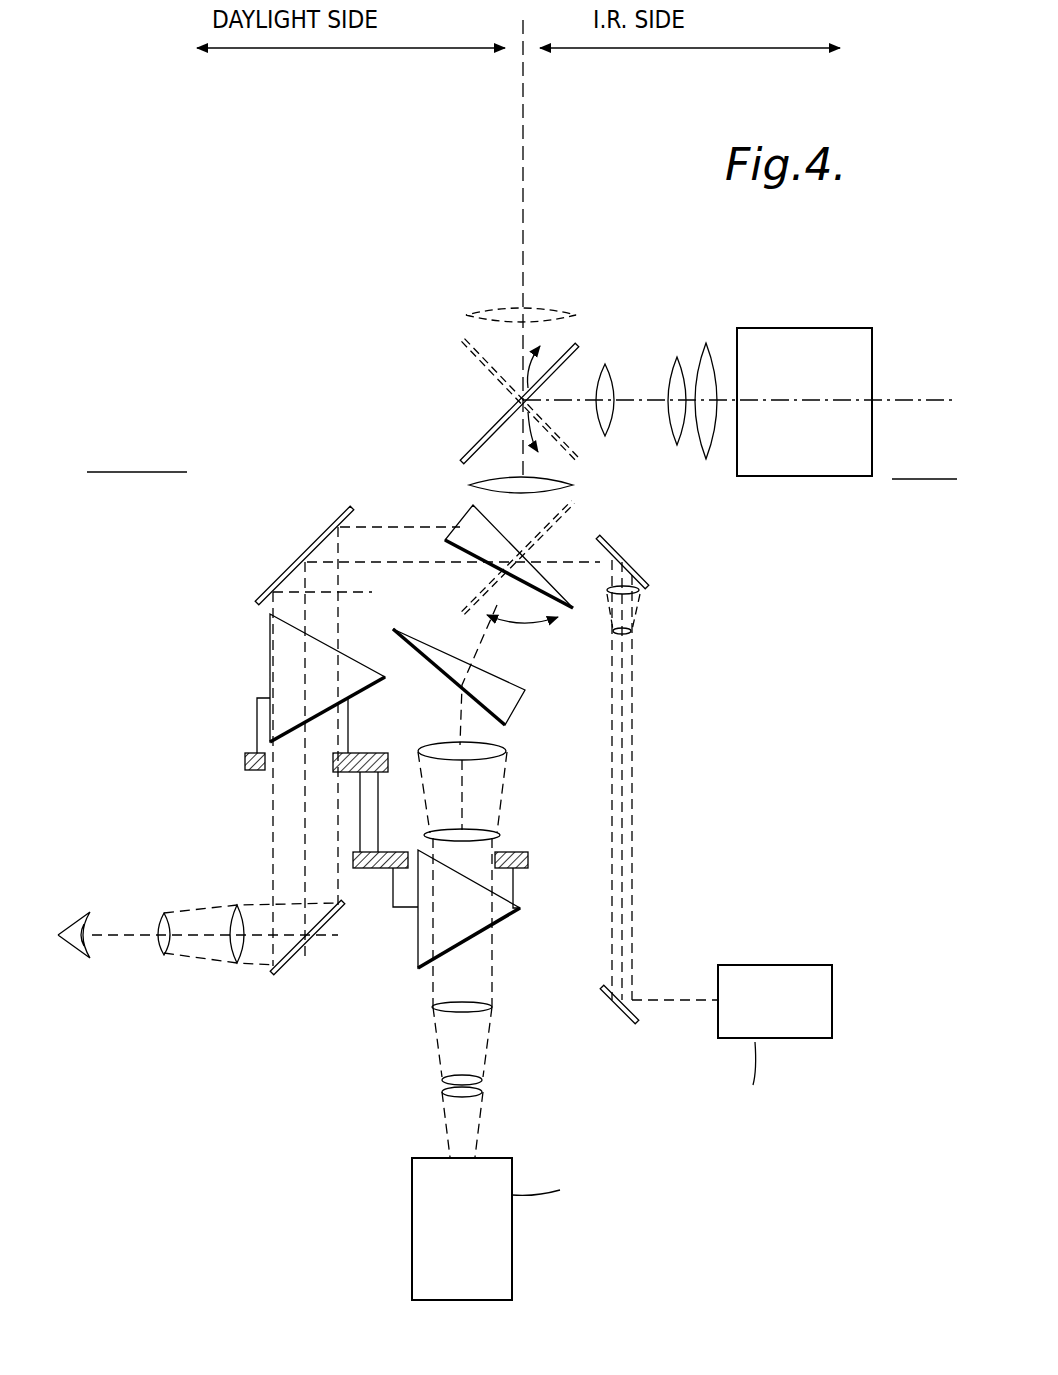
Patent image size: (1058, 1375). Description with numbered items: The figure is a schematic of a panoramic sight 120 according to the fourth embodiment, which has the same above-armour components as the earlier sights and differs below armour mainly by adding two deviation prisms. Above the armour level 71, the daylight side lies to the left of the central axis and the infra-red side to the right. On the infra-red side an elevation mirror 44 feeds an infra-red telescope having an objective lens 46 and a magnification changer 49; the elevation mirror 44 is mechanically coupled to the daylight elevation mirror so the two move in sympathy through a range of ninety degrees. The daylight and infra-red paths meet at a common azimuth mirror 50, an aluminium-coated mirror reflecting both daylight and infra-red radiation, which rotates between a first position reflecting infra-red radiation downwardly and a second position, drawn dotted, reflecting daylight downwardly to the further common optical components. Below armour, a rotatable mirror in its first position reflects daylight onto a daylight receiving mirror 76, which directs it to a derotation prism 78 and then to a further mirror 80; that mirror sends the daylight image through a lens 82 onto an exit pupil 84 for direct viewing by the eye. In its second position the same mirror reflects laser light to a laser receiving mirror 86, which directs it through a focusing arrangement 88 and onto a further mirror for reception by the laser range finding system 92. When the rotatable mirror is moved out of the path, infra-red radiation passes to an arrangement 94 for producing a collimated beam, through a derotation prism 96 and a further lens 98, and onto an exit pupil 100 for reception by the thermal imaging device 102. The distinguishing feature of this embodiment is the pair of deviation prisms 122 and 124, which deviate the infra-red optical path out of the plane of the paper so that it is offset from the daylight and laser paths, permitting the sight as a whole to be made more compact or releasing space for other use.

The panoramic sight 120 is at (222, 197).
The azimuth mirror 50 is at (575, 345).
The magnification changer 49 is at (675, 342).
The objective lens 46 is at (706, 343).
The elevation mirror 44 is at (802, 485).
The armour level 71 is at (158, 472).
The deviation prism 122 is at (460, 528).
The daylight receiving mirror 76 is at (277, 575).
The derotation prism 78 is at (322, 688).
The deviation prism 124 is at (440, 650).
The laser receiving mirror 86 is at (627, 560).
The focusing arrangement 88 is at (653, 593).
The arrangement for producing a collimated beam 94 is at (513, 840).
The derotation prism 96 is at (468, 922).
The further lens 98 is at (452, 1010).
The exit pupil 100 is at (497, 1102).
The thermal imaging device 102 is at (481, 1240).
The laser range finding system 92 is at (786, 1016).
The further mirror 80 is at (295, 950).
The lens 82 is at (233, 948).
The exit pupil 84 is at (152, 953).